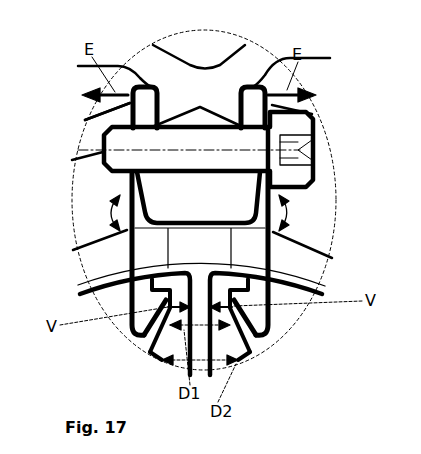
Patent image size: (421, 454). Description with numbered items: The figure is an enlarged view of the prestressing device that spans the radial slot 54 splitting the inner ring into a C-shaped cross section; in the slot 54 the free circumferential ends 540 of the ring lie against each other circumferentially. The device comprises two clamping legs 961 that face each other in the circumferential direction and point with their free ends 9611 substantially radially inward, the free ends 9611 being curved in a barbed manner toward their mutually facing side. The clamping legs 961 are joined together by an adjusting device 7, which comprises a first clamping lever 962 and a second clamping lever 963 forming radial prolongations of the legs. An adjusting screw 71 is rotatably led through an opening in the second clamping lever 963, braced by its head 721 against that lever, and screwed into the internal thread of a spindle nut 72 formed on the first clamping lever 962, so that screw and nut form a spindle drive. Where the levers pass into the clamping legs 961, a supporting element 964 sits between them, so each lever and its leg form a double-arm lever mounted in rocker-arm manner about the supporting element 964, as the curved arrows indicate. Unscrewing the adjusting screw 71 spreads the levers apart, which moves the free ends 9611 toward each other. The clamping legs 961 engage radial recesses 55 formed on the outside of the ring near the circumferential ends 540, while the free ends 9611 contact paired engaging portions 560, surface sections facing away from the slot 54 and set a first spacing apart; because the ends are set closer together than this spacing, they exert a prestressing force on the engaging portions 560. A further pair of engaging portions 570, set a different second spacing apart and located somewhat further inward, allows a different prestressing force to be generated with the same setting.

The adjusting device 7 is at (210, 117).
The adjusting screw 71 is at (203, 143).
The head 721 is at (290, 176).
The spindle nut 72 is at (112, 173).
The radial slot 54 is at (192, 258).
The radial recesses 55 is at (285, 308).
The free circumferential ends 540 is at (90, 293).
The engaging portions 560 is at (160, 310).
The further engaging portions 570 is at (242, 360).
The clamping legs 961 is at (128, 258).
The free ends 9611 is at (160, 328).
The first clamping lever 962 is at (130, 120).
The second clamping lever 963 is at (270, 100).
The supporting element 964 is at (197, 268).